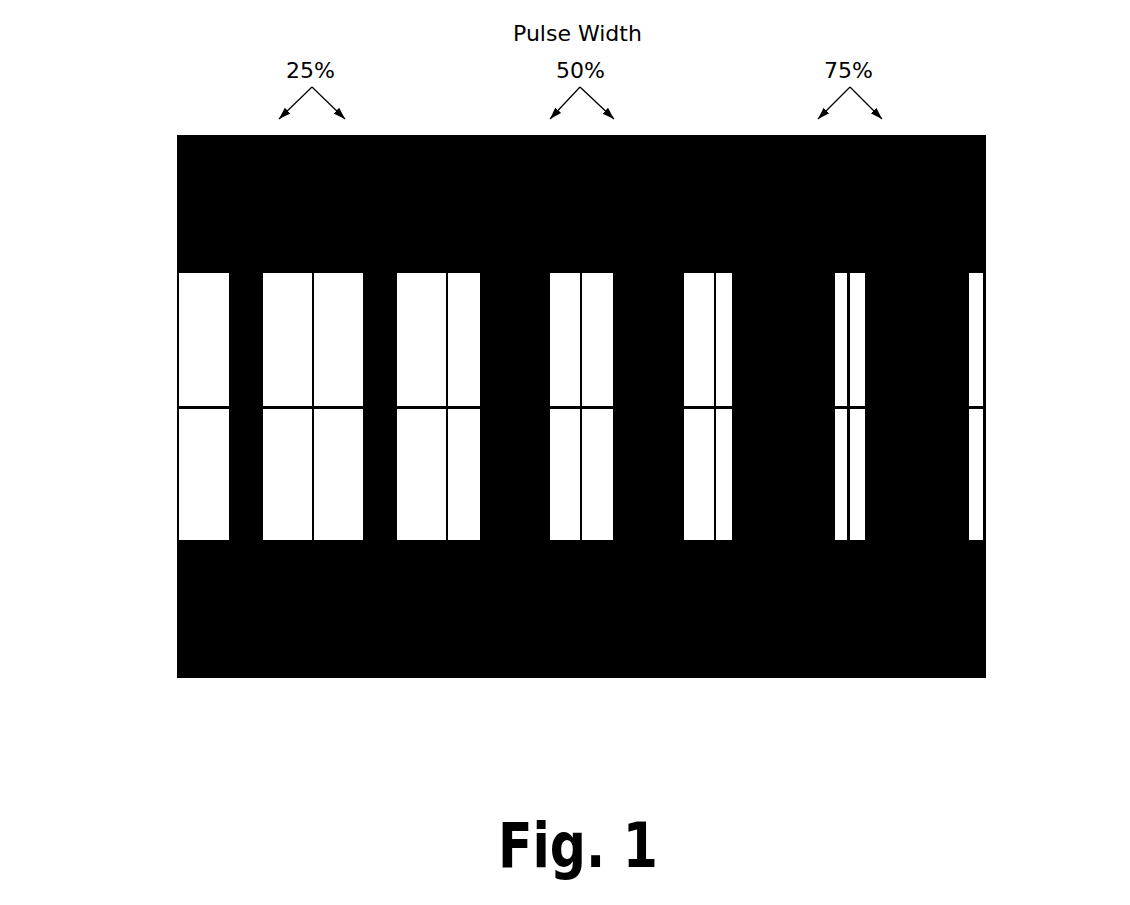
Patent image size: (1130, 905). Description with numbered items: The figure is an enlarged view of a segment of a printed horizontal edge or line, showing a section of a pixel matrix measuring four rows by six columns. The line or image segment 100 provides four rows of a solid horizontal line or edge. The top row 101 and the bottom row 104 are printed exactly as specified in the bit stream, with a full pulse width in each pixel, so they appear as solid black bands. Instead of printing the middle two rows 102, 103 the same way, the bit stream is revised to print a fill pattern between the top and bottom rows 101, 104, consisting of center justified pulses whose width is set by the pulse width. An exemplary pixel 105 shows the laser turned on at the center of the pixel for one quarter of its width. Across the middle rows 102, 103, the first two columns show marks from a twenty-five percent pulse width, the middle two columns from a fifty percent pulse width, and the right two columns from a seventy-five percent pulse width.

The line or image segment 100 is at (588, 463).
The top row 101 is at (987, 205).
The middle row 102 is at (987, 342).
The middle row 103 is at (987, 475).
The bottom row 104 is at (987, 609).
The pixel 105 is at (177, 338).